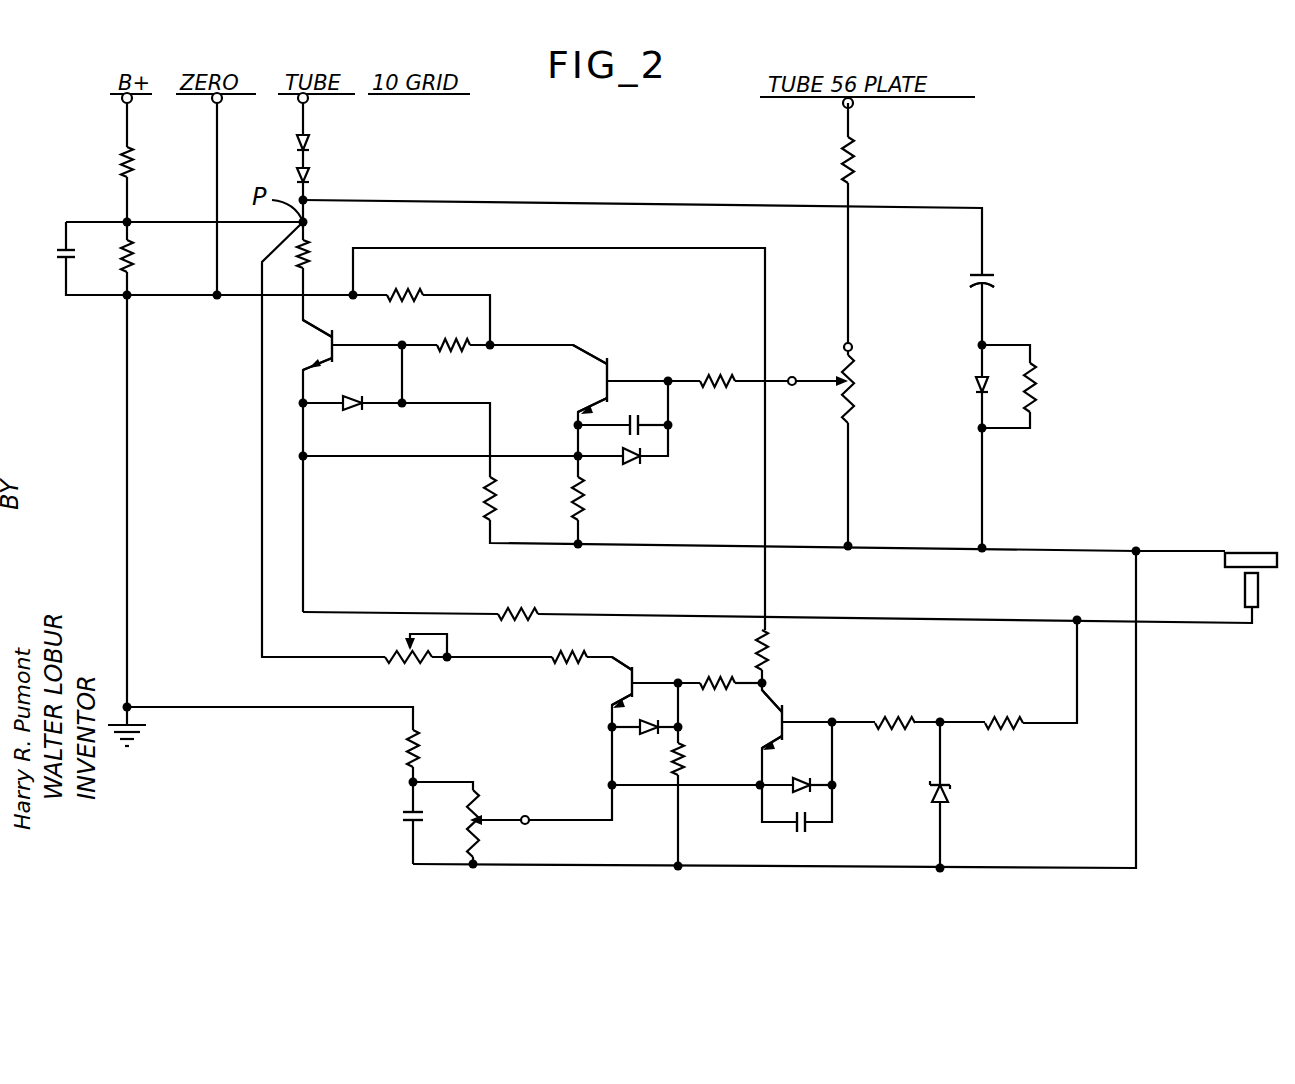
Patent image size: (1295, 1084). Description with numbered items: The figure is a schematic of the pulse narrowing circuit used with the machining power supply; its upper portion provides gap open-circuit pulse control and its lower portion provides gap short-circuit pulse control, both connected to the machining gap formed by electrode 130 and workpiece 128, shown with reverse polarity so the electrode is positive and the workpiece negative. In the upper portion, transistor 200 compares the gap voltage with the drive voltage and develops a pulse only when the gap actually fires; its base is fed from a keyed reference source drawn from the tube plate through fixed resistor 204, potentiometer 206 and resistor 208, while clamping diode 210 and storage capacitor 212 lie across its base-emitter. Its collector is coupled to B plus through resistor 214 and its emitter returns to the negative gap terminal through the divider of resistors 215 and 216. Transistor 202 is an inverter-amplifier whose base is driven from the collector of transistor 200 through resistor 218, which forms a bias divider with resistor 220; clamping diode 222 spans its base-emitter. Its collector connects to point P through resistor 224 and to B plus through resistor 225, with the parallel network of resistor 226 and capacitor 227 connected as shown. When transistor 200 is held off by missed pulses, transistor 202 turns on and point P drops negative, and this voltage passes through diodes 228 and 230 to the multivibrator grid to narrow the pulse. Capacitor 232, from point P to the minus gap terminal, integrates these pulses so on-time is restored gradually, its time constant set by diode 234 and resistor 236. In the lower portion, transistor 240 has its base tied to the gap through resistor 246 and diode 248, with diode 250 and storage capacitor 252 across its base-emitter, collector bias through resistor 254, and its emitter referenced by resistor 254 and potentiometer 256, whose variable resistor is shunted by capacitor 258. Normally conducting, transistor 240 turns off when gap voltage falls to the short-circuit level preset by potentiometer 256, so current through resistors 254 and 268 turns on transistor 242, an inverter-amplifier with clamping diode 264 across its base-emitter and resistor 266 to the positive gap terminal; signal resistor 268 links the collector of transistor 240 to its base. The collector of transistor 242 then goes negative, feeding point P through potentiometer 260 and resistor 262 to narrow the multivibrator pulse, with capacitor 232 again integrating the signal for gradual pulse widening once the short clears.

The workpiece 128 is at (1252, 540).
The electrode 130 is at (1230, 590).
The transistor 200 is at (609, 354).
The transistor 202 is at (352, 342).
The fixed resistor 204 is at (896, 160).
The potentiometer 206 is at (863, 375).
The resistor 208 is at (713, 362).
The clamping diode 210 is at (654, 480).
The storage capacitor 212 is at (638, 411).
The resistor 214 is at (434, 280).
The resistor 215 is at (529, 594).
The resistor 216 is at (616, 509).
The resistor 218 is at (471, 366).
The resistor 220 is at (453, 504).
The clamping diode 222 is at (370, 424).
The resistor 224 is at (336, 244).
The resistor 225 is at (89, 162).
The resistor 226 is at (161, 259).
The capacitor 227 is at (37, 260).
The diode 228 is at (343, 177).
The diode 230 is at (343, 137).
The capacitor 232 is at (1023, 282).
The diode 234 is at (942, 397).
The resistor 236 is at (1072, 387).
The transistor 240 is at (856, 713).
The transistor 242 is at (644, 665).
The resistor 246 is at (1018, 703).
The diode 248 is at (978, 795).
The diode 250 is at (796, 772).
The storage capacitor 252 is at (775, 841).
The resistor 254 is at (580, 700).
The potentiometer 256 is at (501, 802).
The capacitor 258 is at (376, 826).
The potentiometer 260 is at (381, 676).
The resistor 262 is at (546, 678).
The clamping diode 264 is at (643, 750).
The resistor 266 is at (709, 762).
The signal resistor 268 is at (710, 667).